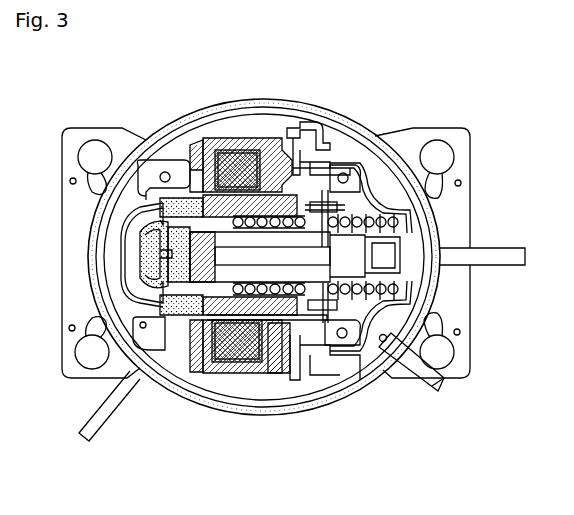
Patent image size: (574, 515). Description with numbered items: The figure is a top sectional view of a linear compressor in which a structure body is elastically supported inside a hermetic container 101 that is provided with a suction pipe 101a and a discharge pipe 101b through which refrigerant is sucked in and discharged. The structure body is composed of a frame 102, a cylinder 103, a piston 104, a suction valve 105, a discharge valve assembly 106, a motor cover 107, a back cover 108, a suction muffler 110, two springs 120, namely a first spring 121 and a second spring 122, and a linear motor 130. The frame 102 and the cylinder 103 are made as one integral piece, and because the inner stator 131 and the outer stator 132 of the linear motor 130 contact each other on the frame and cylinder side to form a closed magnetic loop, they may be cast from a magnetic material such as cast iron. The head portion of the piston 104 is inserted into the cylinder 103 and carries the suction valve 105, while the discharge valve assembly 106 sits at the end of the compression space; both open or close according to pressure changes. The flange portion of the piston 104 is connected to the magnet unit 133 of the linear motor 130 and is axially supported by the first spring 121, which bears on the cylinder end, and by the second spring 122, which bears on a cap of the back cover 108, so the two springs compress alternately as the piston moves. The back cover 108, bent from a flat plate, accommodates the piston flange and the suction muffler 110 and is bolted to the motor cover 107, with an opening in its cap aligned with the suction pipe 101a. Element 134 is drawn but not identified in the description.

The hermetic container 101 is at (148, 130).
The suction pipe 101a is at (510, 266).
The discharge pipe 101b is at (437, 388).
The frame 102 is at (195, 140).
The cylinder 103 is at (227, 205).
The piston 104 is at (254, 225).
The suction valve 105 is at (167, 240).
The discharge valve assembly 106 is at (122, 280).
The motor cover 107 is at (293, 133).
The back cover 108 is at (308, 205).
The suction muffler 110 is at (407, 247).
The springs 120 is at (349, 204).
The first spring 121 is at (382, 200).
The second spring 122 is at (398, 246).
The linear motor 130 is at (260, 385).
The inner stator 131 is at (227, 360).
The outer stator 132 is at (236, 367).
The magnet unit 133 is at (268, 340).
The fixing pin 134 is at (327, 295).